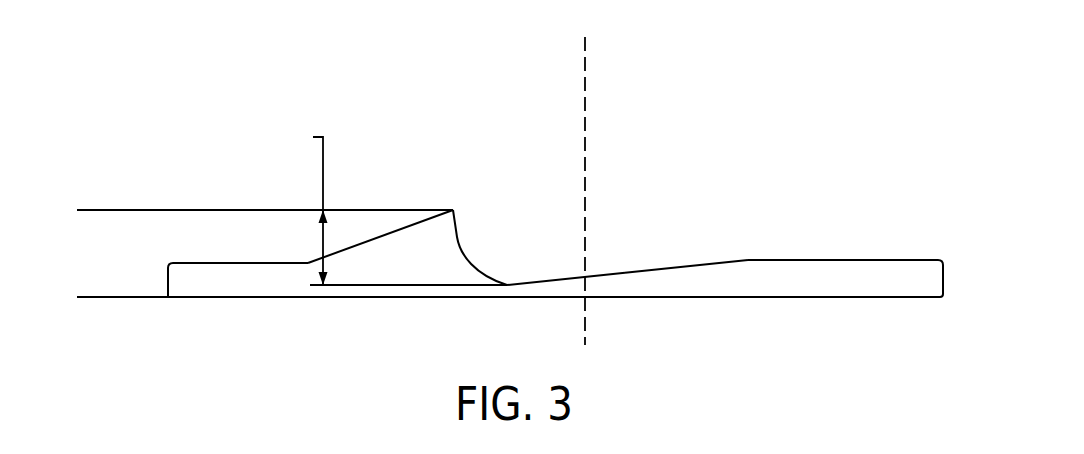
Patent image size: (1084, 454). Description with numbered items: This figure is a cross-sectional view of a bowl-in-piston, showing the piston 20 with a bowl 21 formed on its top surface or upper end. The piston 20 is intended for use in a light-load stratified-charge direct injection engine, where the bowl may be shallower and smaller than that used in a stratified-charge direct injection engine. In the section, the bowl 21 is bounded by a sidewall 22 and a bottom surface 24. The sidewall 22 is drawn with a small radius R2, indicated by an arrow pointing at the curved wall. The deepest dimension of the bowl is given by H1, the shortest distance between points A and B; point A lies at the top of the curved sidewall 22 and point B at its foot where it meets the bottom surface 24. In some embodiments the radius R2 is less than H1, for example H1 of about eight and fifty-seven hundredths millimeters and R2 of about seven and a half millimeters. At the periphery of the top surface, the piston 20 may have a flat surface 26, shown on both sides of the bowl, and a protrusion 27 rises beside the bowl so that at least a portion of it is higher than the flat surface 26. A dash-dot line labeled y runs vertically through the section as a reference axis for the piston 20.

The piston 20 is at (818, 103).
The bowl 21 is at (607, 275).
The sidewall 22 is at (462, 248).
The bottom surface 24 is at (666, 268).
The flat surface 26 is at (208, 262).
The protrusion 27 is at (388, 230).
The point A is at (453, 210).
The point B is at (513, 290).
The shortest distance between points A and B H1 is at (306, 211).
The radius R2 is at (486, 266).
The axis y is at (588, 74).